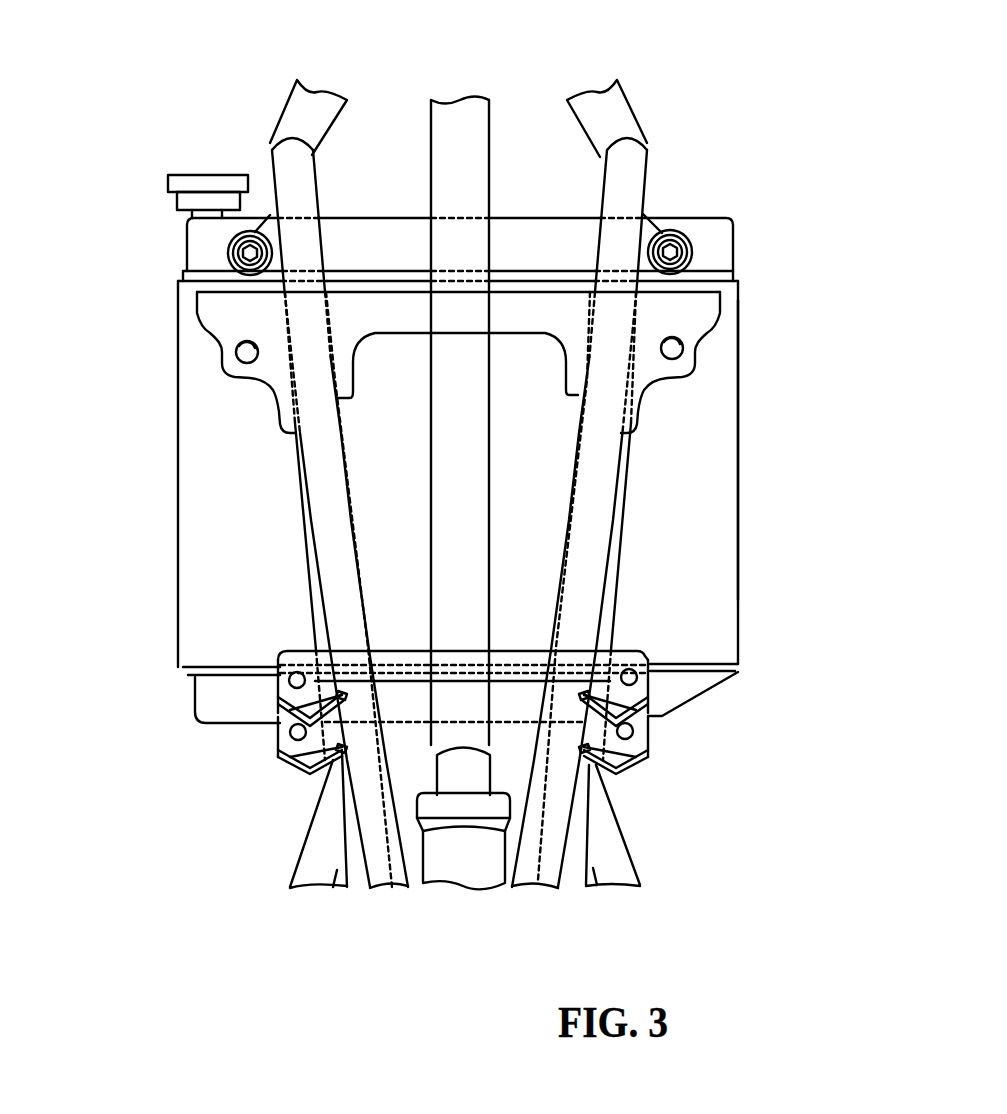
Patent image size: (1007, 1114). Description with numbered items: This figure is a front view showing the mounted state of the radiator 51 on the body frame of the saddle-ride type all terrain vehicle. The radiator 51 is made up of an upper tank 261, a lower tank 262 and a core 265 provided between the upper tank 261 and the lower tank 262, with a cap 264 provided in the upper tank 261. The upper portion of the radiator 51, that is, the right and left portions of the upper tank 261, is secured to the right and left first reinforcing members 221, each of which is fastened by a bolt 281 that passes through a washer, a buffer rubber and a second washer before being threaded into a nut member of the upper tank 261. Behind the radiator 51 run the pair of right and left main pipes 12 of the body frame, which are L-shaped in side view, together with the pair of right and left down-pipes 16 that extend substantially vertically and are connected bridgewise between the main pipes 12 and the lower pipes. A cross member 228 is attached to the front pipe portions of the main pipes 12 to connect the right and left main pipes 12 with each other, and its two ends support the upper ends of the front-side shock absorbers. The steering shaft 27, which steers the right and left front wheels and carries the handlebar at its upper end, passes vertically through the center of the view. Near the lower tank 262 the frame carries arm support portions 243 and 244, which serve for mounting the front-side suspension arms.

The radiator 51 is at (177, 497).
The core 265 is at (727, 490).
The upper tank 261 is at (722, 225).
The first reinforcing member 221 is at (228, 250).
The bolt 281 is at (240, 256).
The cap 264 is at (206, 180).
The cross member 228 is at (720, 303).
The steering shaft 27 is at (472, 142).
The main pipe 12 is at (357, 573).
The down-pipe 16 is at (310, 583).
The arm support portion 243 is at (285, 695).
The arm support portion 244 is at (283, 757).
The lower tank 262 is at (683, 693).